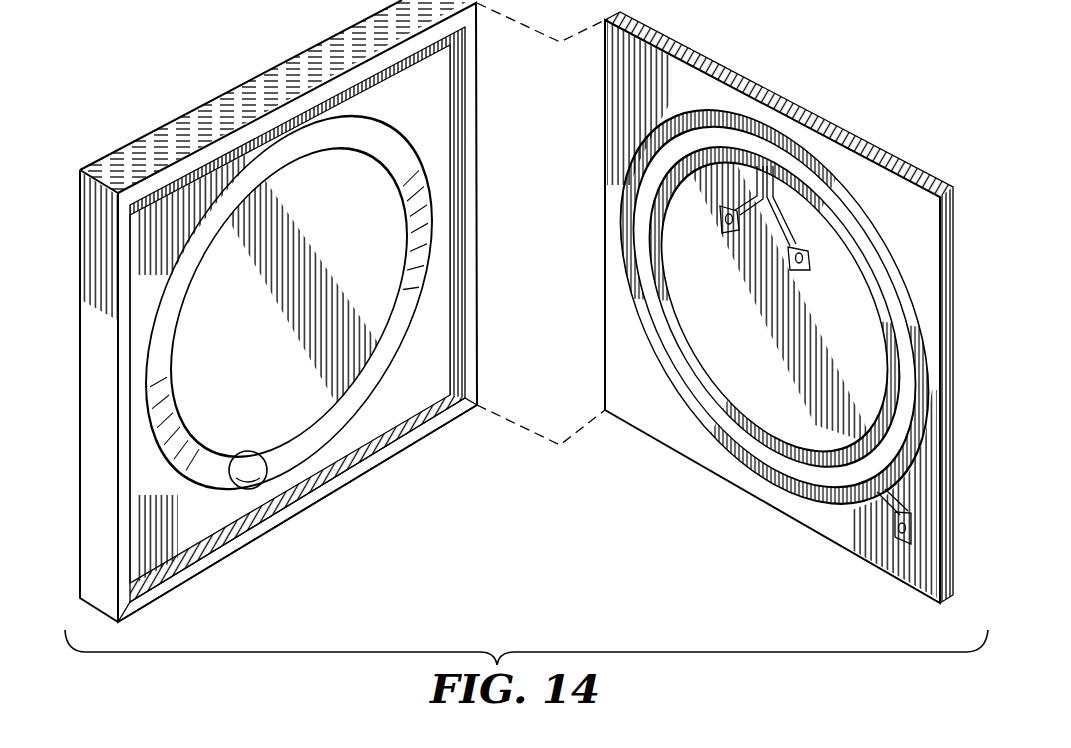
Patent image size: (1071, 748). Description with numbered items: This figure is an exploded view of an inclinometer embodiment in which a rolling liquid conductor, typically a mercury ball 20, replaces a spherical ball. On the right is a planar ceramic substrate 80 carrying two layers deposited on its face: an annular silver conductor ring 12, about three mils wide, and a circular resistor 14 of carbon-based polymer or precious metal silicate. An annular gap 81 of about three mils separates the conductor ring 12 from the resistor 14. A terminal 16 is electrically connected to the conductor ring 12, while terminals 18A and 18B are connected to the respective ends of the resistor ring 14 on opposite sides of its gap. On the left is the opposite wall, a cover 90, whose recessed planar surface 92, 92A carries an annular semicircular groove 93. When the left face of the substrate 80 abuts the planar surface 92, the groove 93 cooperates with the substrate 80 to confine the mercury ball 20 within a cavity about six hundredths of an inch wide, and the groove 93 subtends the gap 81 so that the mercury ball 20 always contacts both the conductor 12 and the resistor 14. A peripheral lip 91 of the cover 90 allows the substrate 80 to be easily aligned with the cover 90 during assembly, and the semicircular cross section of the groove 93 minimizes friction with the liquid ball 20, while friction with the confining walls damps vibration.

The opposite wall 90 is at (139, 138).
The peripheral lip 91 is at (260, 535).
The recessed planar surface 92 is at (184, 543).
The planar surface 92A is at (293, 358).
The semicircular groove 93 is at (183, 472).
The liquid mercury ball 20 is at (256, 461).
The substrate 80 is at (918, 198).
The annular gap 81 is at (892, 330).
The conductor ring 12 is at (847, 215).
The circular resistor 14 is at (668, 303).
The terminal 16 is at (897, 527).
The terminal 18A is at (729, 234).
The terminal 18B is at (803, 271).